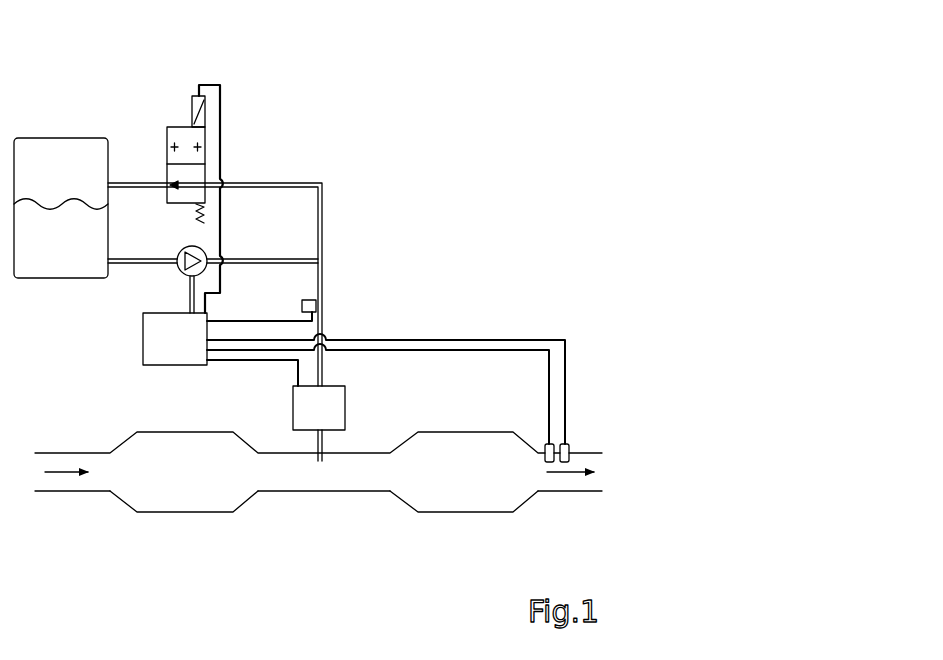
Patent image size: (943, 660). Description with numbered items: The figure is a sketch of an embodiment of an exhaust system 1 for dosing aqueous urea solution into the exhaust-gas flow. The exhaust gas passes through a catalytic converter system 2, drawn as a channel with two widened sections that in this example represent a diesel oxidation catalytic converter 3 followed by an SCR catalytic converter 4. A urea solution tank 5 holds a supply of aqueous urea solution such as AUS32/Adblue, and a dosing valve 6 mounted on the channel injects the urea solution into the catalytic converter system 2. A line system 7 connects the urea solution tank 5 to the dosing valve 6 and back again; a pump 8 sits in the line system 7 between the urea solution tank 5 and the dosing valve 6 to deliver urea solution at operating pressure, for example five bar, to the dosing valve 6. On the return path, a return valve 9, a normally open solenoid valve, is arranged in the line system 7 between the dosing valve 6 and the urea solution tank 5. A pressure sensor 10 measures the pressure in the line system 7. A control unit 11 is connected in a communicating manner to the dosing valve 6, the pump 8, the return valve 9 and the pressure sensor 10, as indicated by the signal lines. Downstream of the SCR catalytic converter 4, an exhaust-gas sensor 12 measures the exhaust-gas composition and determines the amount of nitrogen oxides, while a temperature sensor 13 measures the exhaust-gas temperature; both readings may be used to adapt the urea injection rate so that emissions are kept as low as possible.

The exhaust system 1 is at (409, 245).
The catalytic converter system 2 is at (318, 521).
The diesel oxidation catalytic converter 3 is at (193, 517).
The SCR catalytic converter 4 is at (451, 518).
The urea solution tank 5 is at (80, 135).
The dosing valve 6 is at (290, 402).
The line system 7 is at (294, 183).
The pump 8 is at (170, 273).
The return valve 9 is at (168, 125).
The pressure sensor 10 is at (299, 304).
The control unit 11 is at (140, 357).
The exhaust-gas sensor 12 is at (544, 442).
The temperature sensor 13 is at (572, 442).